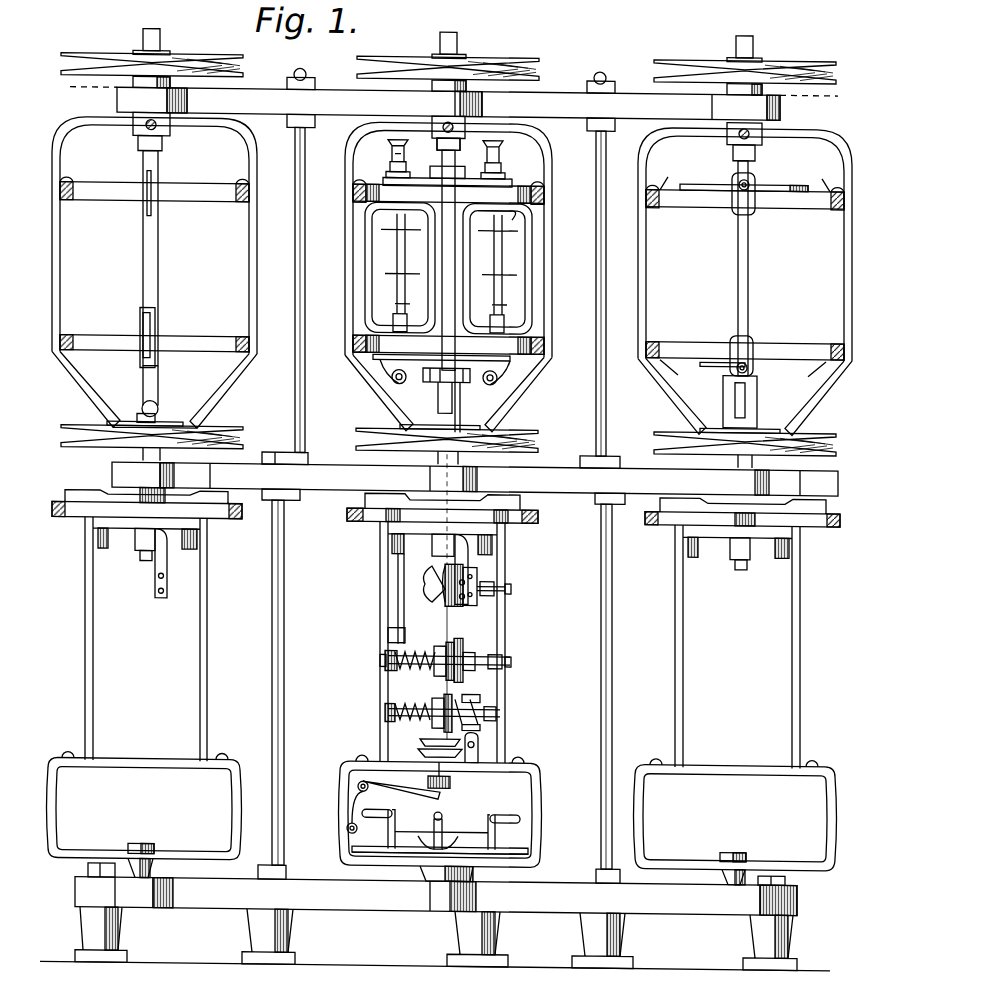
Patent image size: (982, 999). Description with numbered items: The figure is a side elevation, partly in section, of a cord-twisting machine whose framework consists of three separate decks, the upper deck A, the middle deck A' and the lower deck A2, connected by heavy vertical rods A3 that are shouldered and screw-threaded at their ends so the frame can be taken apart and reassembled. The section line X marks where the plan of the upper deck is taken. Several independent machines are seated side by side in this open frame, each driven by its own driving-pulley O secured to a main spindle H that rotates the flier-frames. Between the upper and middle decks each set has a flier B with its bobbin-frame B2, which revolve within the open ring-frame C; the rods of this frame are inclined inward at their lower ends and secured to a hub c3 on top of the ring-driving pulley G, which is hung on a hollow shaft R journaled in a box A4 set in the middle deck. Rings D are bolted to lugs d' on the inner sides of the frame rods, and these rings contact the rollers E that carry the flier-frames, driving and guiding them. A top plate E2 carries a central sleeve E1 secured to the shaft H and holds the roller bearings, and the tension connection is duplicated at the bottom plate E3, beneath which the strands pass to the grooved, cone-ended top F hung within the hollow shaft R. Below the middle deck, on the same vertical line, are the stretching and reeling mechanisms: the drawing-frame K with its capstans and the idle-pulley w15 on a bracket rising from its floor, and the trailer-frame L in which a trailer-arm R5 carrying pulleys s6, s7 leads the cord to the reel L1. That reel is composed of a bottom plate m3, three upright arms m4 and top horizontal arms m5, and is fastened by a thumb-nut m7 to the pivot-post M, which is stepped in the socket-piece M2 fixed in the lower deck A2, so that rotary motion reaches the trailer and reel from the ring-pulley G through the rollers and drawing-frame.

The upper deck A is at (448, 104).
The middle deck A' is at (475, 509).
The lower deck A2 is at (330, 895).
The vertical rods A3 is at (318, 248).
The box A4 is at (428, 475).
The flier B is at (365, 284).
The bobbin-frame B2 is at (515, 224).
The ring-frame C is at (270, 252).
The hub c3 is at (780, 405).
The rings D is at (200, 183).
The lugs d' is at (742, 281).
The rollers E is at (383, 168).
The sleeve E1 is at (378, 352).
The top plate E2 is at (706, 172).
The bottom plate E3 is at (375, 360).
The top F is at (438, 395).
The ring-driving pulley G is at (505, 445).
The main spindle H is at (150, 28).
The drawing-frame K is at (207, 637).
The trailer-frame L is at (531, 812).
The reel L1 is at (495, 846).
The pivot-post M is at (148, 834).
The socket-piece M2 is at (445, 932).
The driving-pulley O is at (205, 70).
The hollow shaft R is at (472, 405).
The trailer-arm R5 is at (455, 782).
The section line x x X is at (452, 96).
The idle-pulley w15 is at (478, 748).
The trailer pulley s6 is at (358, 782).
The trailer pulley s7 is at (347, 824).
The bottom plate m3 is at (528, 850).
The upright arms m4 is at (480, 820).
The top horizontal arms m5 is at (508, 814).
The thumb-nut m7 is at (445, 840).